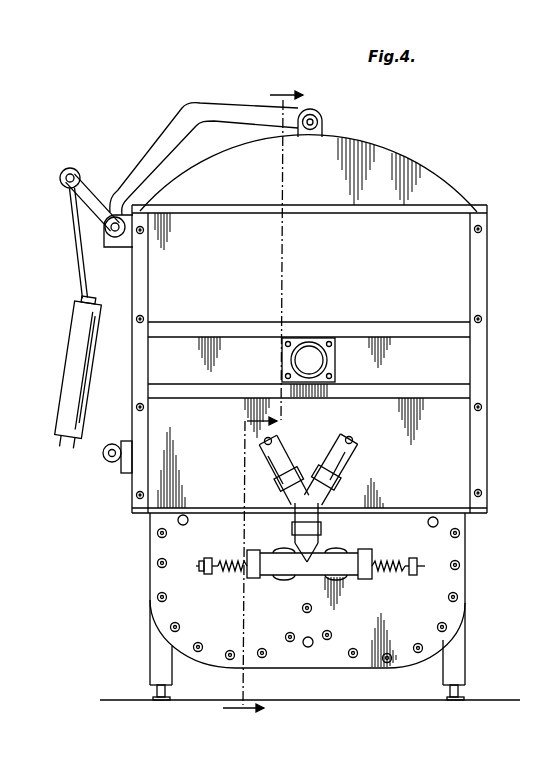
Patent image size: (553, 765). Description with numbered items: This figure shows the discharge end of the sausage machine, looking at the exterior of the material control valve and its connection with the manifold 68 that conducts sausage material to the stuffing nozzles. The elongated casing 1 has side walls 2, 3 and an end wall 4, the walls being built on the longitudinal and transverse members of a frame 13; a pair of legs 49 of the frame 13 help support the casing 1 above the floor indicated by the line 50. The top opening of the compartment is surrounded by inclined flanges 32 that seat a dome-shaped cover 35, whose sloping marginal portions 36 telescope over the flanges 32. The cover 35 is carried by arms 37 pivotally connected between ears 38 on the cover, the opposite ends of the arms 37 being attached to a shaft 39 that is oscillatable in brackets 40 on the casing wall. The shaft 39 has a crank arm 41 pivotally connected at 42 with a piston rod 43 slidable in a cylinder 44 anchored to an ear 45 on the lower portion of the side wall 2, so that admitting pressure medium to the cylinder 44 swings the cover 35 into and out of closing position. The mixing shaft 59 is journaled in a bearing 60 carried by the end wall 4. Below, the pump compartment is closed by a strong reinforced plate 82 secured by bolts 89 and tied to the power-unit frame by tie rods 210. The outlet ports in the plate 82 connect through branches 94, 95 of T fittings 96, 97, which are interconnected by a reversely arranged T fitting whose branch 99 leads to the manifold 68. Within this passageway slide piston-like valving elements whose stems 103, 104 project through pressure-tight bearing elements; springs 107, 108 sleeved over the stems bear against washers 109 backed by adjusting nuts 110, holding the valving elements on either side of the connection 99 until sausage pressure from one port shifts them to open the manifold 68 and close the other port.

The casing 1 is at (487, 212).
The side wall 2 is at (122, 275).
The side wall 3 is at (488, 292).
The end wall 4 is at (466, 246).
The frame 13 is at (147, 514).
The flanges 32 is at (125, 200).
The cover 35 is at (398, 156).
The marginal portions 36 is at (143, 182).
The arms 37 is at (244, 104).
The ears 38 is at (318, 113).
The shafts 39 is at (111, 239).
The brackets 40 is at (104, 226).
The crank arms 41 is at (82, 197).
The pivotal connection 42 is at (60, 178).
The piston rods 43 is at (78, 267).
The cylinders 44 is at (90, 345).
The ears 45 is at (106, 462).
The legs 49 is at (158, 644).
The floor 50 is at (300, 699).
The shaft 59 is at (319, 360).
The bearing 60 is at (328, 339).
The manifold 68 is at (356, 451).
The plate 82 is at (177, 607).
The bolts 89 is at (157, 598).
The branch 94 is at (285, 552).
The branch 95 is at (337, 552).
The T fitting 96 is at (258, 580).
The T fitting 97 is at (366, 581).
The branch 99 is at (323, 526).
The stem 103 is at (206, 560).
The stem 104 is at (418, 569).
The spring 107 is at (234, 563).
The spring 108 is at (388, 562).
The washers 109 is at (226, 578).
The adjusting nuts 110 is at (208, 572).
The tie rods 210 is at (444, 508).